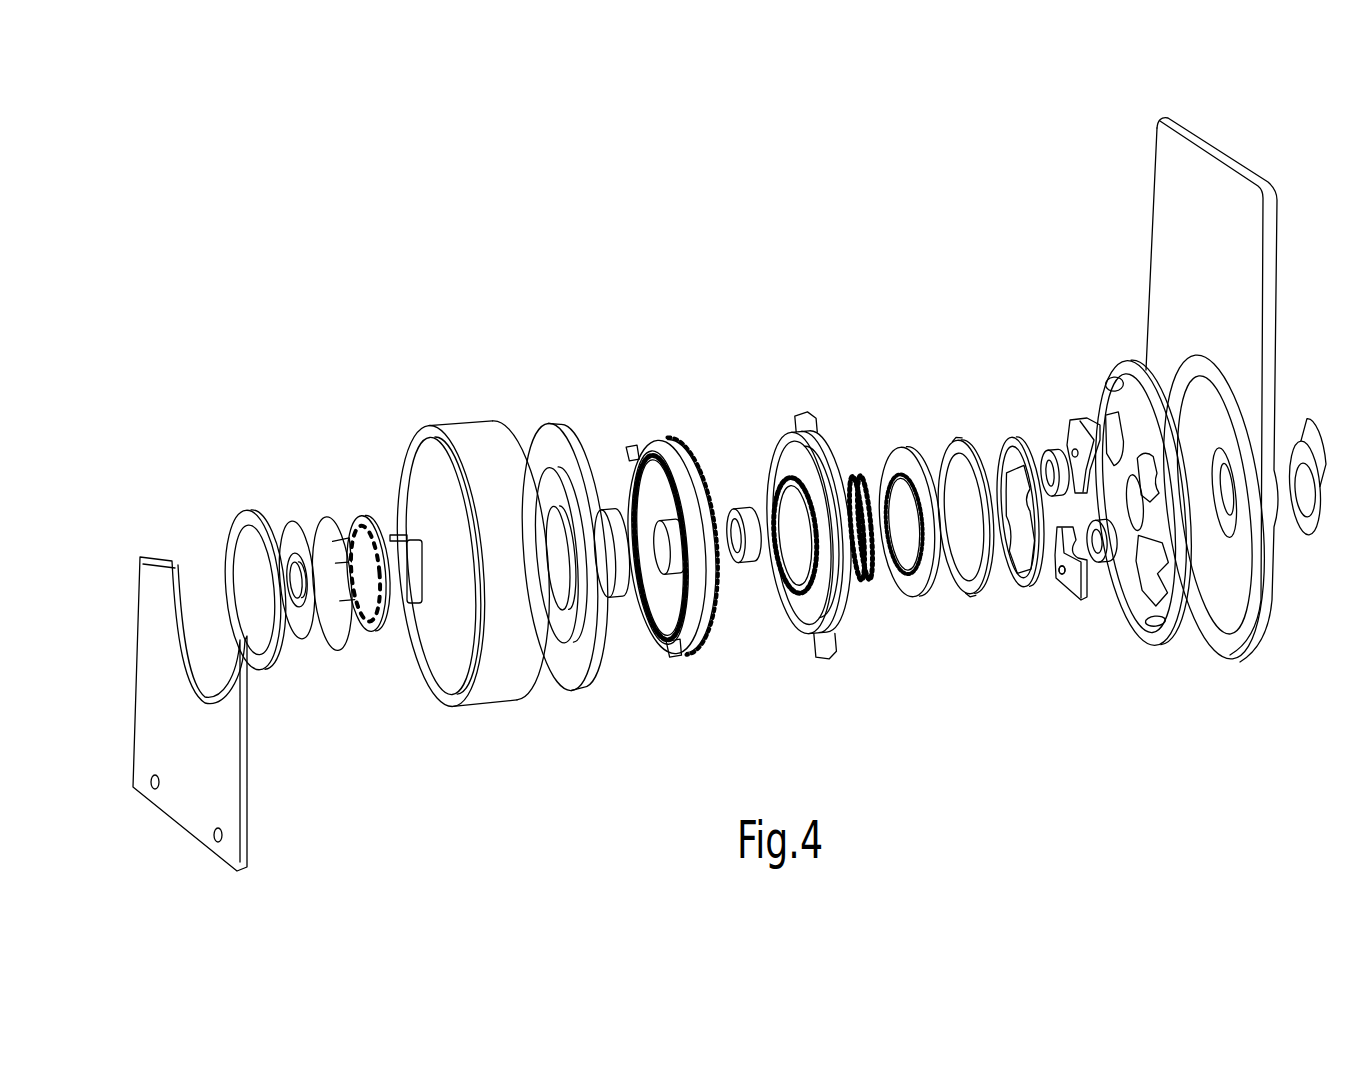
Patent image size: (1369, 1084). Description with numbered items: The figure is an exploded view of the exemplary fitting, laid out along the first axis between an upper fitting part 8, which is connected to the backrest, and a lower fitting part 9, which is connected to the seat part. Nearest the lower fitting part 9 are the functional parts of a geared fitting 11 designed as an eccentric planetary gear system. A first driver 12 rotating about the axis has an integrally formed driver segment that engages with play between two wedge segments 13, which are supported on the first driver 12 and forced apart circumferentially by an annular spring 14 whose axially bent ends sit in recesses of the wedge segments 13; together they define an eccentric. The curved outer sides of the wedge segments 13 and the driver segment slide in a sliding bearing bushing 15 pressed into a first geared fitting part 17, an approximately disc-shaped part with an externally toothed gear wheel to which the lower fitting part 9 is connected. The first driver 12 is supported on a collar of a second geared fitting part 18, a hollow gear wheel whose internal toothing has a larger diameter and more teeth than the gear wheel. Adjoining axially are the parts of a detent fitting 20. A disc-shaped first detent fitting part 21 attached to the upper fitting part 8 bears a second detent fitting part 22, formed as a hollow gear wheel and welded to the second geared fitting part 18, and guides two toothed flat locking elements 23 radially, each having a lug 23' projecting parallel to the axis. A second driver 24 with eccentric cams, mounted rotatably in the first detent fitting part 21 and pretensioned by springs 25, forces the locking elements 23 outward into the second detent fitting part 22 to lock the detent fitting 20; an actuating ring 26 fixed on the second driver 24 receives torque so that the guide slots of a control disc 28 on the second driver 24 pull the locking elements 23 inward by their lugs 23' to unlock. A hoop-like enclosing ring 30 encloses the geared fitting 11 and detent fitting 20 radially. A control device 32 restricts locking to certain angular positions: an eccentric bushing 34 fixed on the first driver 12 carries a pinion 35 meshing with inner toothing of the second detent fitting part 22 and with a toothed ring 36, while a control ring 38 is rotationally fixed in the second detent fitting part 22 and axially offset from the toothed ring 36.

The upper fitting part 8 is at (1173, 237).
The lower fitting part 9 is at (148, 633).
The geared fitting 11 is at (687, 357).
The first driver 12 is at (290, 523).
The wedge segments 13 is at (387, 525).
The annular spring 14 is at (318, 523).
The sliding bearing bushing 15 is at (608, 523).
The first geared fitting part 17 is at (537, 450).
The second geared fitting part 18 is at (640, 447).
The detent fitting 20 is at (1145, 325).
The first detent fitting part 21 is at (1117, 407).
The second detent fitting part 22 is at (787, 447).
The locking elements 23 is at (1061, 527).
The lug 23' is at (1019, 641).
The second driver 24 is at (1230, 452).
The springs 25 is at (1047, 457).
The actuating ring 26 is at (1297, 428).
The control disc 28 is at (1000, 457).
The enclosing ring 30 is at (497, 677).
The control device 32 is at (745, 740).
The eccentric bushing 34 is at (752, 562).
The pinion 35 is at (868, 580).
The toothed ring 36 is at (920, 590).
The control ring 38 is at (963, 593).